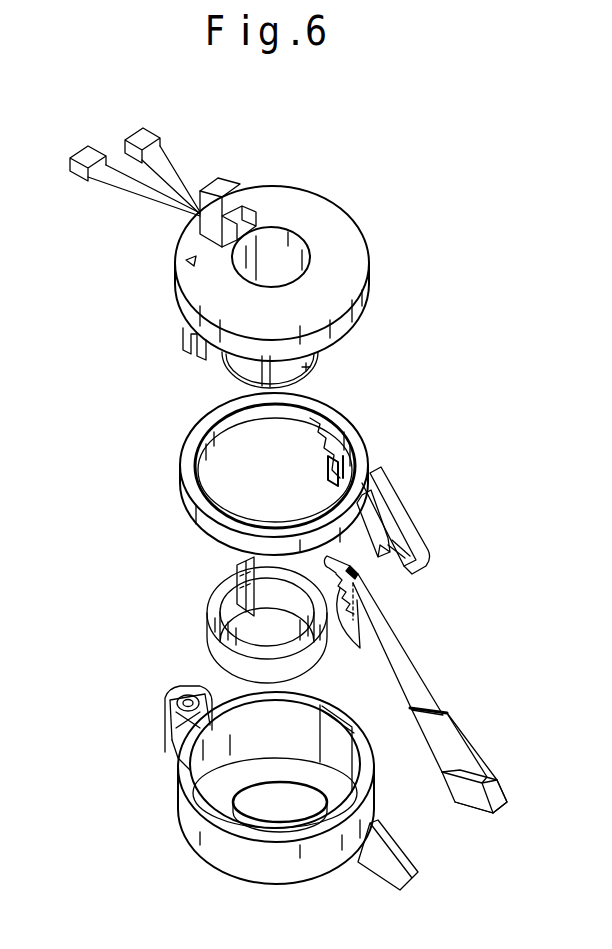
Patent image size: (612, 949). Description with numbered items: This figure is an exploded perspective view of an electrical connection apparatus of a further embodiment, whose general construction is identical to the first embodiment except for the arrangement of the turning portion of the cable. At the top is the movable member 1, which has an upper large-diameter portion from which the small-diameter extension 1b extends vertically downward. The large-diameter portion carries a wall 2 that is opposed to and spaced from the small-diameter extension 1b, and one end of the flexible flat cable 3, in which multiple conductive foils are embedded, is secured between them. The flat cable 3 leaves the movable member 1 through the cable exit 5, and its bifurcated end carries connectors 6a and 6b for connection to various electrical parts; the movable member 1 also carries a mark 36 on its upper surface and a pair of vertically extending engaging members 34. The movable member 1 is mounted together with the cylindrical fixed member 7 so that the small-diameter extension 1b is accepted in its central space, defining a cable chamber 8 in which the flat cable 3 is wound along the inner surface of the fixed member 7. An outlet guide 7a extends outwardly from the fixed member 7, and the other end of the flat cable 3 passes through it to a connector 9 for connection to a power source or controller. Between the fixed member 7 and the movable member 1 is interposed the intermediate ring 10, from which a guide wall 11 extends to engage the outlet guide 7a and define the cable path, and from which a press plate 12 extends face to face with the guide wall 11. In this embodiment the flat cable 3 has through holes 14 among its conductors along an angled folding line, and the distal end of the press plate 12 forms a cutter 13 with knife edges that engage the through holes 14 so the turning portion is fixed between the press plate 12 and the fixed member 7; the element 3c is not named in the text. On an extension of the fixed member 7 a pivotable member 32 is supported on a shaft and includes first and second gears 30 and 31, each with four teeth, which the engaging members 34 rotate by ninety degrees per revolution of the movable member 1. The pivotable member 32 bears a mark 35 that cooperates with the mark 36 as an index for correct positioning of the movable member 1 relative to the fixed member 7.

The movable member 1 is at (373, 284).
The small-diameter extension 1b is at (312, 366).
The wall 2 is at (242, 366).
The flexible flat cable 3 is at (432, 684).
The toothed sector 3c is at (360, 586).
The cable exit 5 is at (220, 180).
The connector 6a is at (140, 134).
The connector 6b is at (76, 175).
The cylindrical fixed member 7 is at (256, 862).
The outlet guide 7a is at (405, 864).
The cable chamber 8 is at (226, 782).
The connector 9 is at (500, 797).
The intermediate ring 10 is at (362, 455).
The guide wall 11 is at (400, 536).
The press plate 12 is at (332, 474).
The cutter 13 is at (316, 426).
The through holes 14 is at (335, 620).
The first gear 30 is at (174, 722).
The second gear 31 is at (166, 710).
The pivotable member 32 is at (176, 756).
The engaging members 34 is at (182, 345).
The mark 35 is at (178, 690).
The mark 36 is at (178, 284).